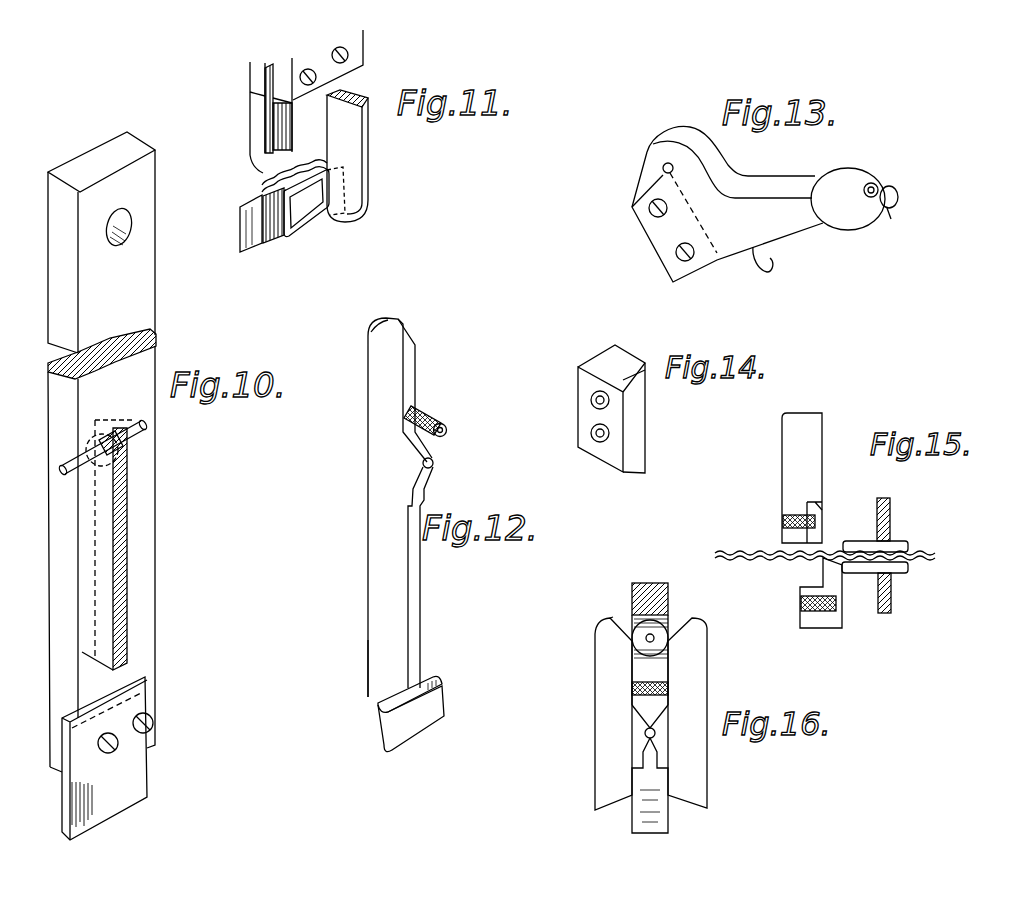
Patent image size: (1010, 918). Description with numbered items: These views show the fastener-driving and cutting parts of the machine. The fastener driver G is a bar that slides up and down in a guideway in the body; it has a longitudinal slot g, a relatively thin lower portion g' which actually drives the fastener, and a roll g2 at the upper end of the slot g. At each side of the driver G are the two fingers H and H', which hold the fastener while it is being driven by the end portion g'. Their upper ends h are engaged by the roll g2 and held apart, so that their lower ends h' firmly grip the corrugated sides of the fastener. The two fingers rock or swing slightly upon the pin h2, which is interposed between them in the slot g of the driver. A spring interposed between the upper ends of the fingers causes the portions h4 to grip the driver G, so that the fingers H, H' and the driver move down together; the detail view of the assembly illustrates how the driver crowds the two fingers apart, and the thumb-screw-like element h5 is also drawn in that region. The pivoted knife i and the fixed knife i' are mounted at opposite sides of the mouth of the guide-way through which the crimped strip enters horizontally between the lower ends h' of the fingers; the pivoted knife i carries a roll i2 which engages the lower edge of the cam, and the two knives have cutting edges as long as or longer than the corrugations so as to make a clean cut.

In FIG. 10, the fastener driver G is at (142, 300).
In FIG. 11, the fastener driver G is at (363, 52).
In FIG. 16, the fastener driver G is at (662, 583).
In FIG. 11, the finger H is at (251, 115).
In FIG. 12, the finger H is at (369, 507).
In FIG. 15, the finger H is at (897, 509).
In FIG. 16, the finger H is at (590, 714).
In FIG. 11, the finger H' is at (371, 156).
In FIG. 15, the finger H' is at (896, 615).
In FIG. 16, the finger H' is at (717, 713).
In FIG. 10, the longitudinal slot g is at (144, 545).
In FIG. 10, the thin lower portion g' is at (130, 758).
In FIG. 11, the thin lower portion g' is at (242, 111).
In FIG. 10, the roll g2 is at (125, 456).
In FIG. 16, the roll g2 is at (633, 617).
In FIG. 12, the upper ends of the fingers h is at (407, 330).
In FIG. 16, the upper ends of the fingers h is at (576, 634).
In FIG. 11, the lower ends of the fingers h' is at (259, 215).
In FIG. 12, the lower ends of the fingers h' is at (423, 713).
In FIG. 15, the lower ends of the fingers h' is at (889, 559).
In FIG. 12, the pin h2 is at (433, 460).
In FIG. 16, the pin h2 is at (646, 734).
In FIG. 11, the gripping portions of the fingers h4 is at (263, 155).
In FIG. 12, the gripping portions of the fingers h4 is at (387, 598).
In FIG. 12, the thumb screw h5 is at (423, 412).
In FIG. 16, the thumb screw h5 is at (667, 686).
In FIG. 13, the pivoted knife i is at (727, 217).
In FIG. 15, the pivoted knife i is at (812, 478).
In FIG. 14, the fixed knife i' is at (611, 426).
In FIG. 15, the fixed knife i' is at (798, 593).
In FIG. 13, the roll i2 is at (853, 217).